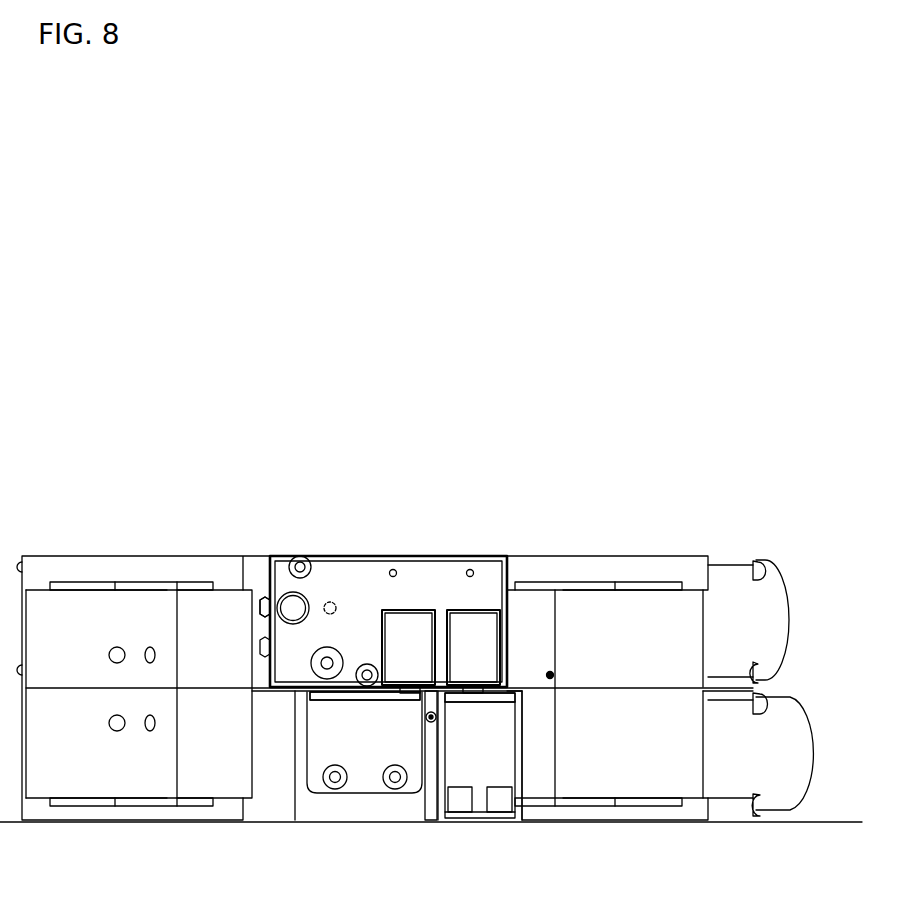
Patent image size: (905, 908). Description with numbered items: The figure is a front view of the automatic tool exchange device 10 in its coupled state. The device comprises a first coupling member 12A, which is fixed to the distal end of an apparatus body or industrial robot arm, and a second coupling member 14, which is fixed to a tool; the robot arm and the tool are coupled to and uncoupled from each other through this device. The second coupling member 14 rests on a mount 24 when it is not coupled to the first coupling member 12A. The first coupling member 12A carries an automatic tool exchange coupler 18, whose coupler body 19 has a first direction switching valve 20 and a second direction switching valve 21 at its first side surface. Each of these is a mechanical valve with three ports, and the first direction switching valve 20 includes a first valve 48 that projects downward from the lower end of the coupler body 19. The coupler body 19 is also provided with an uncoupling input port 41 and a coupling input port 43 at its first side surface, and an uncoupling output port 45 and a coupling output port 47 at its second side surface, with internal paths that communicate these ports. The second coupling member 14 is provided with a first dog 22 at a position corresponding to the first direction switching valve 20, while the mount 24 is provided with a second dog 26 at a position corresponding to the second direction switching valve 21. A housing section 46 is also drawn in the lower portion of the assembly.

The automatic tool exchange device 10 is at (778, 538).
The first coupling member 12A is at (622, 548).
The second coupling member 14 is at (802, 676).
The automatic tool exchange coupler 18 is at (297, 553).
The coupler body 19 is at (355, 570).
The first direction switching valve 20 is at (407, 640).
The second direction switching valve 21 is at (483, 640).
The first dog 22 is at (320, 701).
The mount 24 is at (810, 821).
The second dog 26 is at (494, 694).
The uncoupling input port 41 is at (265, 595).
The coupling input port 43 is at (333, 700).
The uncoupling output port 45 is at (338, 592).
The housing section 46 is at (477, 694).
The coupling output port 47 is at (313, 661).
The first valve 48 is at (408, 693).